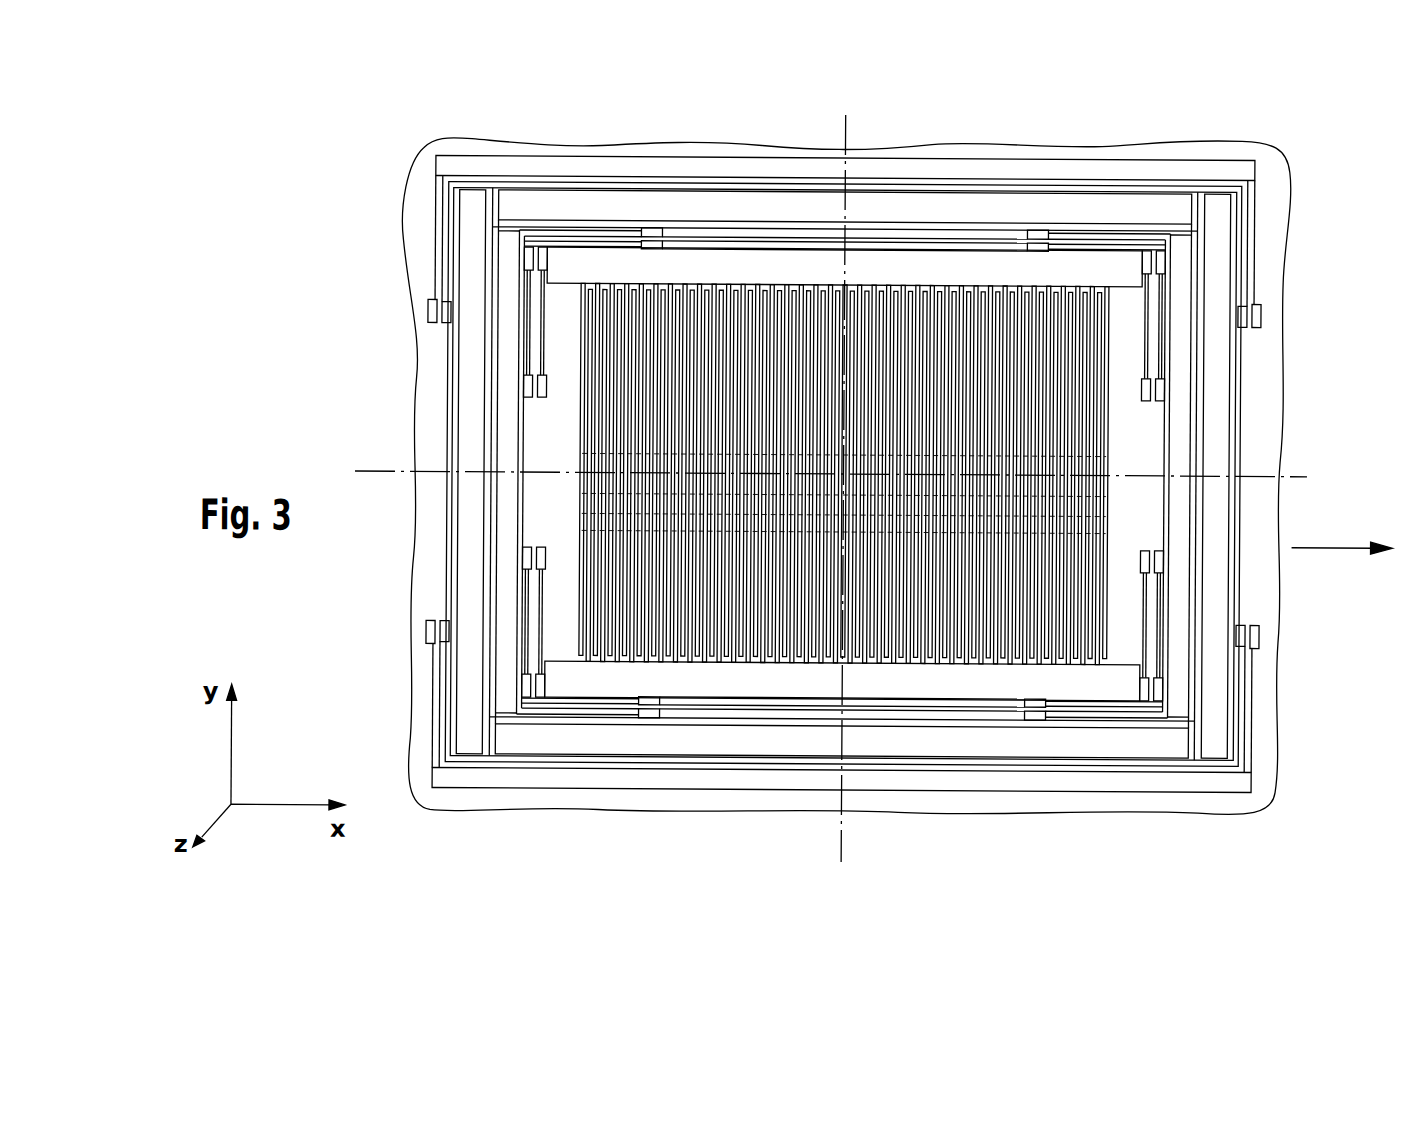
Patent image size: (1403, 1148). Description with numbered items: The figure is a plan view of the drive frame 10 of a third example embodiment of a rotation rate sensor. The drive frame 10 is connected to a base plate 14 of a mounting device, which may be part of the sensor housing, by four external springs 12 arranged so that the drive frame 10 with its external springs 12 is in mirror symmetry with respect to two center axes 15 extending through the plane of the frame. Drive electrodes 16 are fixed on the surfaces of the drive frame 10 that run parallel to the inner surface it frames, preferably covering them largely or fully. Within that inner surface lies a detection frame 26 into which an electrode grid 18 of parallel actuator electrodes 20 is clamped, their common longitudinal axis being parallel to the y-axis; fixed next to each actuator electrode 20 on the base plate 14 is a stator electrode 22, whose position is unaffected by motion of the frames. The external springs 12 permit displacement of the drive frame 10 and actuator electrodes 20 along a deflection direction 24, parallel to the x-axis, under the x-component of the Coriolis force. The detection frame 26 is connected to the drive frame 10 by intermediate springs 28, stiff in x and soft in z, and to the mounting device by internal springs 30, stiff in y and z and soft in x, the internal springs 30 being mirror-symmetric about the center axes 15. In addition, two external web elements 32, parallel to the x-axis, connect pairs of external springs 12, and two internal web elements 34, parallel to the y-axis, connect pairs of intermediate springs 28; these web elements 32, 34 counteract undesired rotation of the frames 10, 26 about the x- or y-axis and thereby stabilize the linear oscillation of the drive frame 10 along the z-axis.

The drive frame 10 is at (690, 187).
The external spring 12 is at (437, 245).
The base plate 14 is at (1030, 150).
The center axes 15 is at (405, 462).
The drive electrode 16 is at (604, 207).
The electrode grid 18 is at (727, 680).
The actuator electrodes 20 is at (932, 290).
The stator electrode 22 is at (880, 657).
The deflection direction 24 is at (1333, 545).
The detection frame 26 is at (760, 265).
The intermediate spring 28 is at (1125, 230).
The internal spring 30 is at (528, 582).
The external web elements 32 is at (890, 176).
The internal web elements 34 is at (507, 348).